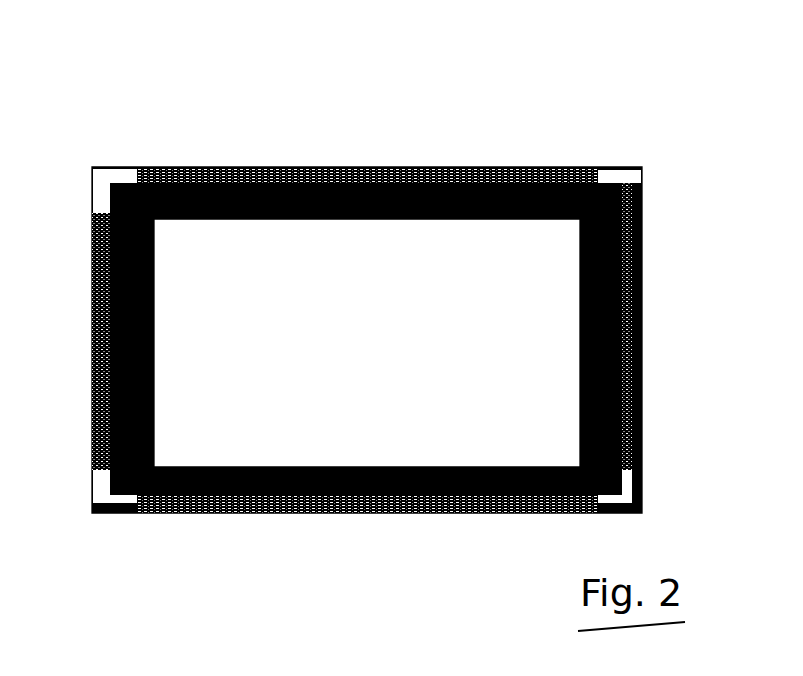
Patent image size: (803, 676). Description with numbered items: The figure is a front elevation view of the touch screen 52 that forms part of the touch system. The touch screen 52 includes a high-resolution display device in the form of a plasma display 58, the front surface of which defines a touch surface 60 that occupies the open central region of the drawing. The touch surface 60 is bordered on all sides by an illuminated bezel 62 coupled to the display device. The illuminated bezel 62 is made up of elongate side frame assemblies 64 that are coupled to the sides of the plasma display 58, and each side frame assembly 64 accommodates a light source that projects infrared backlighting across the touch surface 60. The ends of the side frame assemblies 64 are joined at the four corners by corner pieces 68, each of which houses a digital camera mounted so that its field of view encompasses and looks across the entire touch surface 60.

The touch screen 52 is at (414, 272).
The plasma display 58 is at (464, 236).
The touch surface 60 is at (380, 343).
The illuminated bezel 62 is at (646, 318).
The side frame assemblies 64 is at (345, 167).
The corner pieces 68 is at (103, 173).